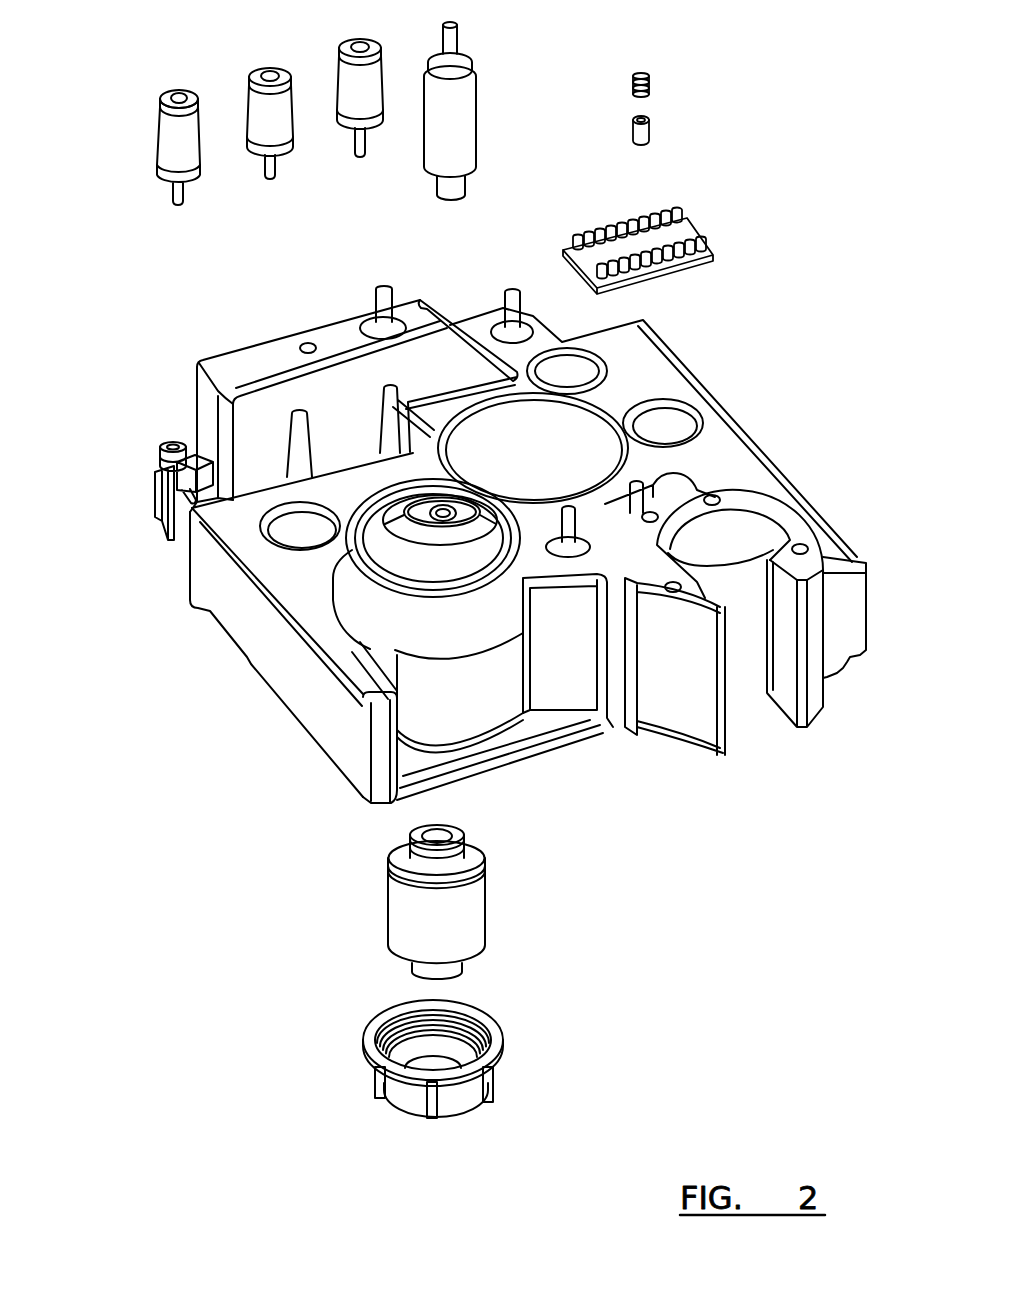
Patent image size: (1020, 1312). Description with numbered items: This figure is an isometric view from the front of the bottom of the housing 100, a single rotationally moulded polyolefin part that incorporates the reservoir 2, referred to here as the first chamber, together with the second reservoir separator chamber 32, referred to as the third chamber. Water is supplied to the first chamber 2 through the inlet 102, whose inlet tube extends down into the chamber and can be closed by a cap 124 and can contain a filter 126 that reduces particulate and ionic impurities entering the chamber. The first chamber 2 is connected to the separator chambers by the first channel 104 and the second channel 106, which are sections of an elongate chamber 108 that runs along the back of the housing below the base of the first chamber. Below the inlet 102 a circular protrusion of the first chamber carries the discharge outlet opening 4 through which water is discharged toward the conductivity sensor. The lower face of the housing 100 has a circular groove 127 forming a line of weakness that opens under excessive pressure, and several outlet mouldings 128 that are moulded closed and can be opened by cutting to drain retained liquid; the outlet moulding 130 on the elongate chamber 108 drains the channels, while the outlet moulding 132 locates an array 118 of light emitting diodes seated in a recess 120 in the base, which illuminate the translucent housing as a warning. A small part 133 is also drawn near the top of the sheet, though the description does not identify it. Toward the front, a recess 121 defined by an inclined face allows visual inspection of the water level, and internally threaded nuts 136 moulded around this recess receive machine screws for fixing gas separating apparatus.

The reservoir 2 is at (322, 614).
The discharge outlet opening 4 is at (443, 517).
The second reservoir separator chamber 32 is at (182, 530).
The housing 100 is at (494, 536).
The inlet 102 is at (378, 608).
The first channel 104 is at (414, 303).
The second channel 106 is at (283, 357).
The elongate chamber 108 is at (208, 412).
The array of light emitting diodes 118 is at (690, 232).
The recess 120 is at (700, 473).
The recess 121 is at (751, 709).
The cap 124 is at (373, 1082).
The filter 126 is at (405, 917).
The circular groove 127 is at (595, 400).
The outlet mouldings 128 is at (510, 292).
The outlet moulding 130 is at (378, 291).
The outlet moulding 132 is at (663, 491).
The spring 133 is at (649, 76).
The internally threaded nuts 136 is at (802, 546).